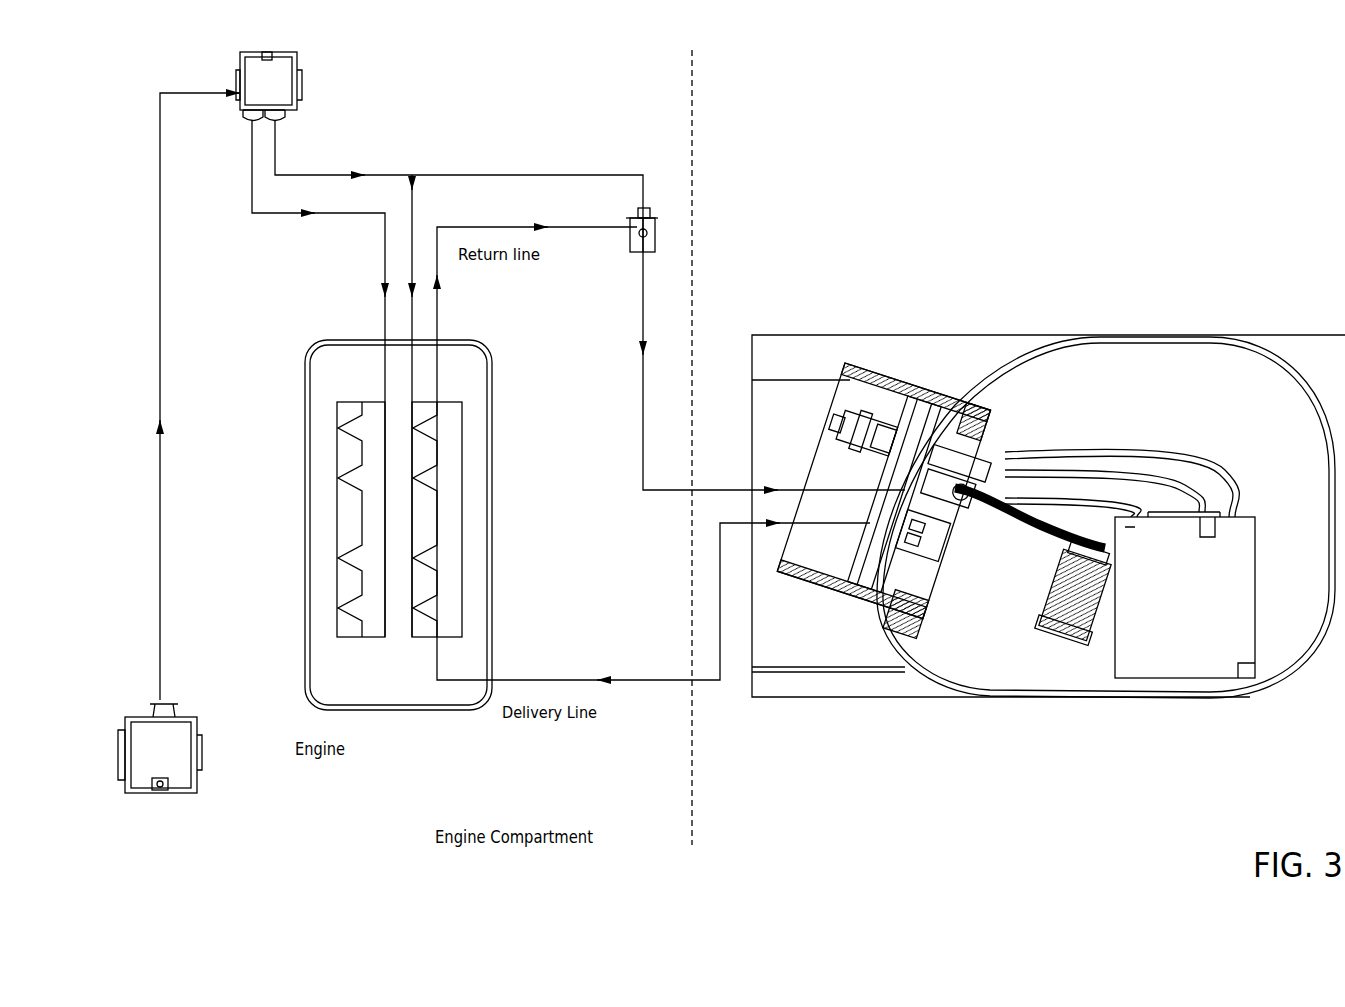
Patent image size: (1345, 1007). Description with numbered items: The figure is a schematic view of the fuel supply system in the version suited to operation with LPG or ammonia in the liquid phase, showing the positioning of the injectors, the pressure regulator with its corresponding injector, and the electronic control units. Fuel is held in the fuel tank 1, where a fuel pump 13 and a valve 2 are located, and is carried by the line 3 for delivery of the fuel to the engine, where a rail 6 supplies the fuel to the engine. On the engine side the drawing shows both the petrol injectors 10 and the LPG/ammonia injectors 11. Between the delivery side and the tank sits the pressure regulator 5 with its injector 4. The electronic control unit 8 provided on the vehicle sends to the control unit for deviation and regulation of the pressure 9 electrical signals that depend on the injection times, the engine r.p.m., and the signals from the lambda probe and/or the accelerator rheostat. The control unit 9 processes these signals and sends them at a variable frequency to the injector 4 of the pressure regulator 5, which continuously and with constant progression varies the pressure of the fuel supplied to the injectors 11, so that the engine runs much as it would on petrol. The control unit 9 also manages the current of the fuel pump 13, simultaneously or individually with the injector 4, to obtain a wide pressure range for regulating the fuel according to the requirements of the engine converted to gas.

The fuel tank 1 is at (1107, 332).
The valve 2 is at (905, 400).
The line for delivery of the fuel 3 is at (528, 680).
The injector 4 is at (652, 207).
The pressure regulator 5 is at (662, 232).
The rail 6 is at (443, 515).
The electronic control unit 8 is at (195, 795).
The control unit for deviation and regulation of the pressure 9 is at (303, 82).
The petrol injectors 10 is at (360, 400).
The LPG/ammonia injectors 11 is at (458, 400).
The fuel pump 13 is at (1007, 583).